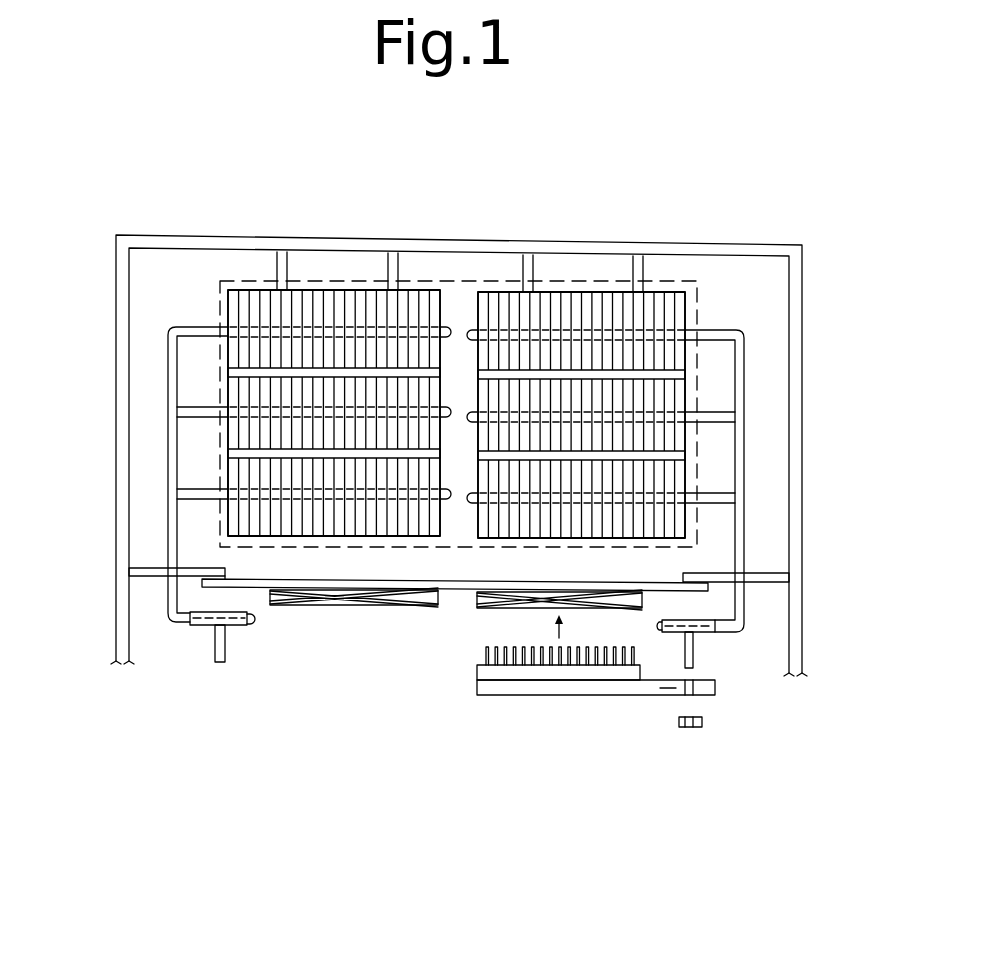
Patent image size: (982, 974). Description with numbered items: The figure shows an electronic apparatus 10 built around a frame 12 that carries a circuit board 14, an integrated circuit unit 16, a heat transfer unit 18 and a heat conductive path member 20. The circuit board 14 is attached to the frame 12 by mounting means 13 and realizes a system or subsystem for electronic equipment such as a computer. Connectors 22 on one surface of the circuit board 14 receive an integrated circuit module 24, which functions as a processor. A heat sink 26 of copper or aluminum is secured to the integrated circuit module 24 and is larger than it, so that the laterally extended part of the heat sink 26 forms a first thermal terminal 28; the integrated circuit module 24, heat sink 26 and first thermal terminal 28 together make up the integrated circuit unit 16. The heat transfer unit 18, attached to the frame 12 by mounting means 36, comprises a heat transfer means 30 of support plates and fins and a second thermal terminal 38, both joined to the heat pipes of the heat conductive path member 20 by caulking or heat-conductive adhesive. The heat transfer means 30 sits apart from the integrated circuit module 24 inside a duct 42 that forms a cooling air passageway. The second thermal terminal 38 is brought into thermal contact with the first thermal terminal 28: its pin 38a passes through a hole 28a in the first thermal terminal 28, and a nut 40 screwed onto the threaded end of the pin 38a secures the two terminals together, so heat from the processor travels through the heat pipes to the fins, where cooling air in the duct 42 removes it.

The electronic apparatus 10 is at (645, 195).
The frame 12 is at (483, 243).
The mounting means 13 is at (145, 568).
The circuit board 14 is at (245, 579).
The integrated circuit unit 16 is at (420, 662).
The heat transfer unit 18 is at (765, 332).
The heat conductive path member 20 is at (168, 356).
The connectors 22 is at (303, 603).
The integrated circuit module 24 is at (482, 676).
The heat sink 26 is at (528, 695).
The first thermal terminal 28 is at (712, 703).
The hole 28a is at (668, 688).
The heat transfer means 30 is at (358, 312).
The mounting means 36 is at (280, 270).
The second thermal terminal 38 is at (190, 625).
The pin 38a is at (697, 653).
The nut 40 is at (690, 728).
The duct 42 is at (219, 283).